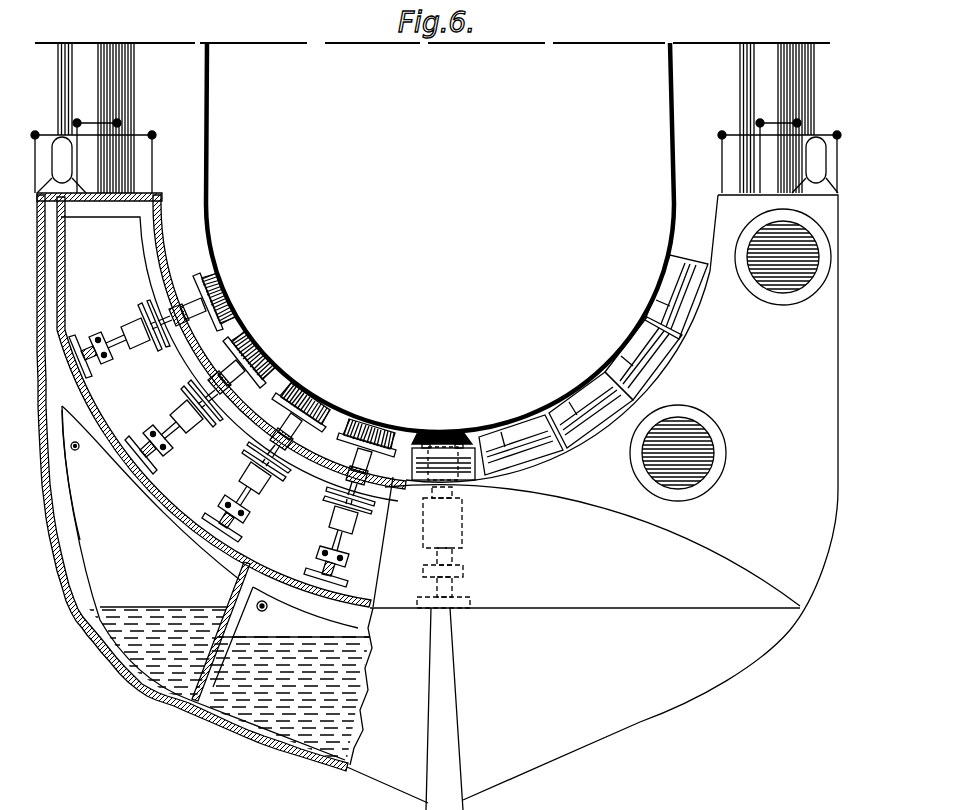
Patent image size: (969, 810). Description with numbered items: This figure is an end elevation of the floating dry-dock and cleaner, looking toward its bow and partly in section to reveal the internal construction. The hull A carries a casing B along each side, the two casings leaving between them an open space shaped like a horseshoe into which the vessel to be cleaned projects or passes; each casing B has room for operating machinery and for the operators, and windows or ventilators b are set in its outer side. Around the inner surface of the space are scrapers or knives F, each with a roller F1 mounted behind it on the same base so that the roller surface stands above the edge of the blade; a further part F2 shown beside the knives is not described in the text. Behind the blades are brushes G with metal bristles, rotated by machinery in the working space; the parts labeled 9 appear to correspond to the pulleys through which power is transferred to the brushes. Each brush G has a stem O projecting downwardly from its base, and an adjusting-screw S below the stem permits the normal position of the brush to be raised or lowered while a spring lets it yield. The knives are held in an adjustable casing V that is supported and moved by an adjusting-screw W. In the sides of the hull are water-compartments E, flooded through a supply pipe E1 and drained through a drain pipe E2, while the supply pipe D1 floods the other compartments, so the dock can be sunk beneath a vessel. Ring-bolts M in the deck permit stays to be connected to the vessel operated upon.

The ring-bolt M is at (57, 150).
The casing B is at (774, 342).
The window or ventilator b is at (795, 300).
The hull A is at (592, 644).
The scraper or knife F is at (440, 448).
The roller F1 is at (663, 283).
The pole piece plate F2 is at (575, 447).
The brush G is at (215, 300).
The stem O is at (222, 340).
The brush holder shaft 9 is at (150, 308).
The adjusting-screw S is at (94, 348).
The water-compartment E is at (151, 493).
The supply pipe E1 is at (77, 452).
The drain pipe E2 is at (165, 630).
The supply pipe D1 is at (267, 609).
The adjustable casing V is at (465, 525).
The adjusting-screw W is at (455, 590).